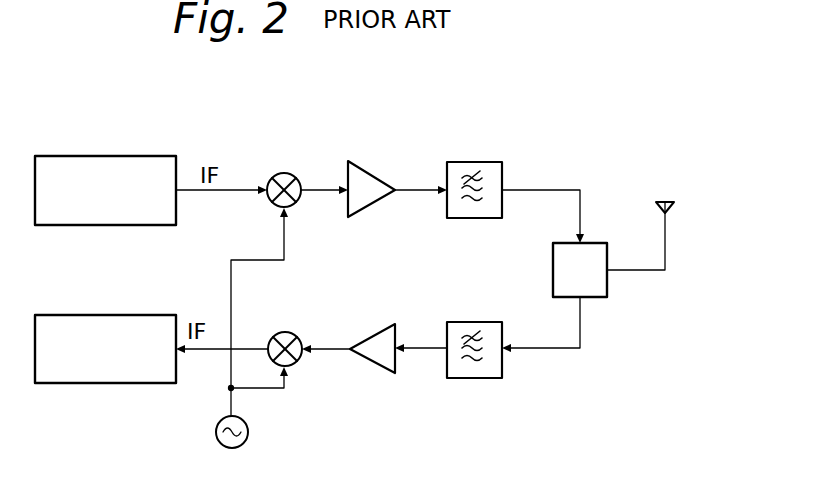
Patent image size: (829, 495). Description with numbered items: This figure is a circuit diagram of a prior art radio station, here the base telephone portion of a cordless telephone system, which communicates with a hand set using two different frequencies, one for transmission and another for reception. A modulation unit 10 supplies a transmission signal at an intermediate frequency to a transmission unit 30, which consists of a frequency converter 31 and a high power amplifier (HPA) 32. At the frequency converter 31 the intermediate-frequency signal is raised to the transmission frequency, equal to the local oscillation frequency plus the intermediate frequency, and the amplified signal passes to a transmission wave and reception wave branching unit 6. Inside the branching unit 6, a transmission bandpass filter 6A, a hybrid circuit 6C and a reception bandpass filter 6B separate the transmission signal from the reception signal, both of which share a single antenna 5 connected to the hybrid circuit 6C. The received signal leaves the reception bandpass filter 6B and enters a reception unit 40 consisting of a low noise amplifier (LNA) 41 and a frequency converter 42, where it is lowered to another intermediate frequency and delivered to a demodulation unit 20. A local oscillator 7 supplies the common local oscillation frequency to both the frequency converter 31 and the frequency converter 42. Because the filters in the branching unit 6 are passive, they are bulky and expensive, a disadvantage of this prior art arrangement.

The modulation unit 10 is at (117, 155).
The demodulation unit 20 is at (112, 314).
The transmission unit 30 is at (342, 107).
The frequency converter 31 is at (283, 172).
The high power amplifier (HPA) 32 is at (365, 170).
The reception unit 40 is at (405, 278).
The low noise amplifier (LNA) 41 is at (370, 333).
The frequency converter 42 is at (287, 332).
The transmission wave and reception wave branching unit 6 is at (542, 422).
The transmission bandpass filter 6A is at (502, 171).
The reception bandpass filter 6B is at (495, 322).
The hybrid circuit 6C is at (598, 243).
The antenna 5 is at (664, 201).
The local oscillator 7 is at (249, 433).